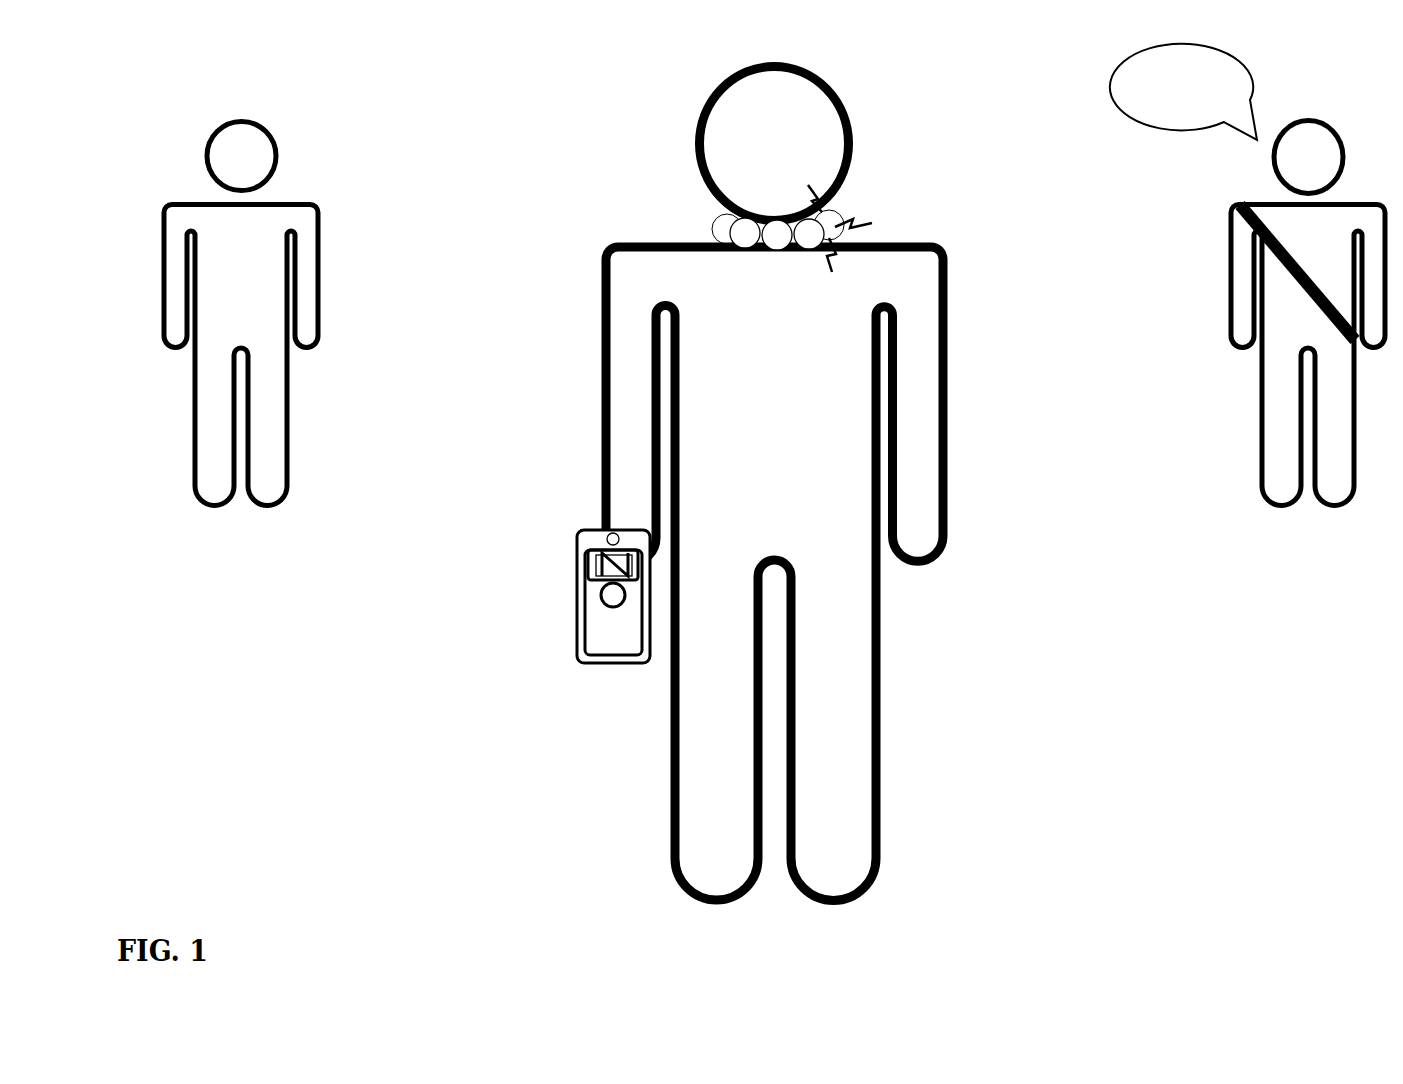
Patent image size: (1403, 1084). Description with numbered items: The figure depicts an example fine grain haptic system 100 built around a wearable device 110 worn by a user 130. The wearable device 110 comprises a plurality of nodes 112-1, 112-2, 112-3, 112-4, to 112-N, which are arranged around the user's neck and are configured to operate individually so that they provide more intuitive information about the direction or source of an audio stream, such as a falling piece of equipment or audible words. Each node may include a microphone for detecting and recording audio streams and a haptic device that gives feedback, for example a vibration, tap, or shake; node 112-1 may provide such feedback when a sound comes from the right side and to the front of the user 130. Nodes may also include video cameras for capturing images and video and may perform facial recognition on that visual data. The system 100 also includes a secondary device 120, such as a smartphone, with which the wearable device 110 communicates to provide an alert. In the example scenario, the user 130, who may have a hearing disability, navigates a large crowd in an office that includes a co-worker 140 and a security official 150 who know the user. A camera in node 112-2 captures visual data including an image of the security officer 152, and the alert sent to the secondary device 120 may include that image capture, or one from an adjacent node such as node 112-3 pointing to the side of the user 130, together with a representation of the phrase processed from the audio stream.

The fine grain haptic (FGH) system 100 is at (774, 496).
The wearable device 110 is at (717, 262).
The node 112-1 is at (743, 249).
The node 112-2 is at (838, 211).
The node 112-3 is at (812, 251).
The node 112-4 is at (712, 225).
The node 112-N is at (777, 251).
The secondary device 120 is at (630, 664).
The user 130 is at (949, 756).
The co-worker 140 is at (333, 184).
The security official 150 is at (1238, 275).
The image of the security officer 152 is at (1204, 104).